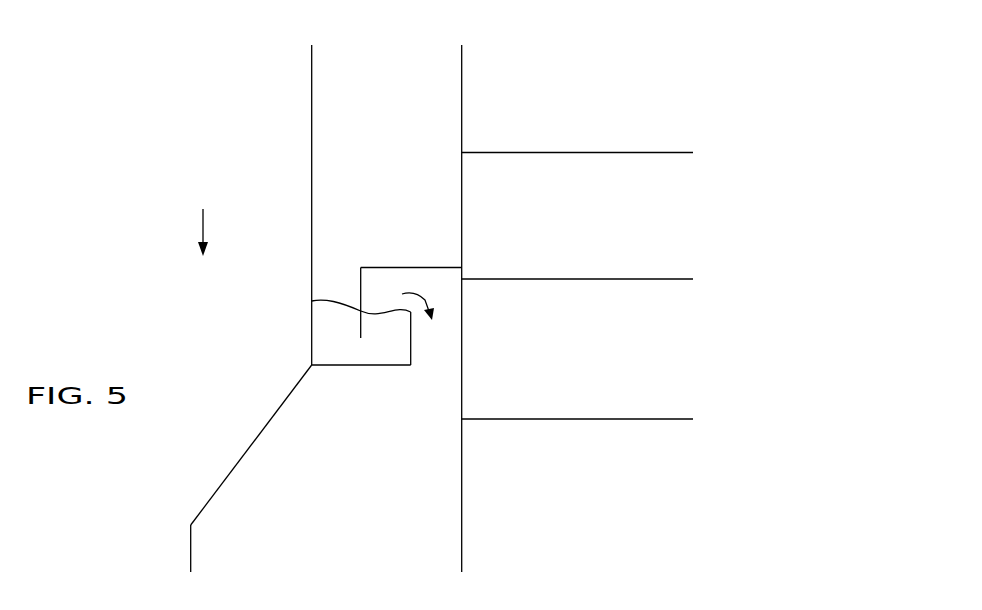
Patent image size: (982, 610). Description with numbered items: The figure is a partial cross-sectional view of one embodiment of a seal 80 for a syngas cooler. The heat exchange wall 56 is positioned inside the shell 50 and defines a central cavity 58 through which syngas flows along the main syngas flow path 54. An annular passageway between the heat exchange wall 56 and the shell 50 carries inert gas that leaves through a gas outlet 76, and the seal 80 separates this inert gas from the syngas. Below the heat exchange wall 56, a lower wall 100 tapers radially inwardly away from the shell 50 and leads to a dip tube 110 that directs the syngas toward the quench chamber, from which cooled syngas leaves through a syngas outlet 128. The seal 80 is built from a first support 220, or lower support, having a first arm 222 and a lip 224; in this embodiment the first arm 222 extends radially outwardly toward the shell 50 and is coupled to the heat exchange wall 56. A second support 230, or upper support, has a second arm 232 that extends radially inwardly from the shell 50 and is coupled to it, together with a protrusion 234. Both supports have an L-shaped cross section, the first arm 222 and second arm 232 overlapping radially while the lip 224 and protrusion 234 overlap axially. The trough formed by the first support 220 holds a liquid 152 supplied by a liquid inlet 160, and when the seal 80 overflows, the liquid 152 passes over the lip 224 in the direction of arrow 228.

The shell 50 is at (462, 93).
The main syngas flow path 54 is at (203, 228).
The heat exchange wall 56 is at (312, 101).
The central cavity 58 is at (222, 152).
The gas outlet 76 is at (577, 152).
The seal 80 is at (292, 300).
The lower wall 100 is at (250, 447).
The dip tube 110 is at (191, 548).
The syngas outlet 128 is at (577, 419).
The liquid 152 is at (348, 337).
The liquid inlet 160 is at (577, 279).
The first support 220 is at (343, 376).
The first arm 222 is at (387, 366).
The lip 224 is at (411, 338).
The arrow 228 is at (422, 294).
The second support 230 is at (382, 250).
The second arm 232 is at (412, 267).
The protrusion 234 is at (360, 292).